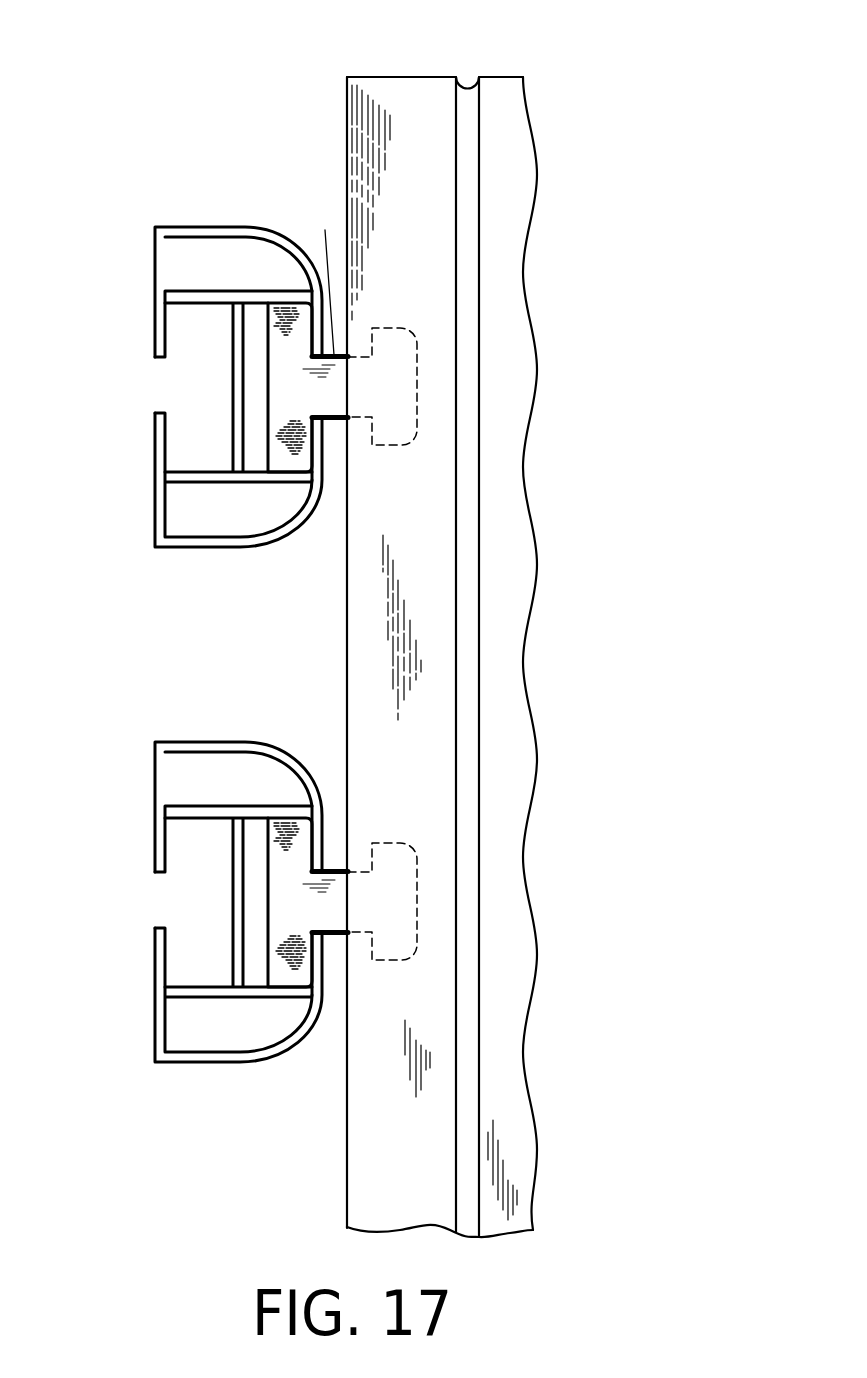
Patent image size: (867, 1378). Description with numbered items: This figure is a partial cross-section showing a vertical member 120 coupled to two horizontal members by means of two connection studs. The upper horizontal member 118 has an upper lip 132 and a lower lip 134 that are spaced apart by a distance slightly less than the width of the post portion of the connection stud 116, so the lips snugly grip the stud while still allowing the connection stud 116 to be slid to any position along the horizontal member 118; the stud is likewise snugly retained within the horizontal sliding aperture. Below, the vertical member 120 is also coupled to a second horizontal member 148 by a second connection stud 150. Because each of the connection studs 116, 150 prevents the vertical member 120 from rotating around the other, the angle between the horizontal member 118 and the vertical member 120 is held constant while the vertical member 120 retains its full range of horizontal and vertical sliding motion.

The vertical member 120 is at (417, 95).
The horizontal member 118 is at (153, 267).
The connection stud 116 is at (323, 355).
The upper lip 132 is at (312, 338).
The lower lip 134 is at (330, 432).
The second horizontal member 148 is at (155, 1020).
The second connection stud 150 is at (328, 938).